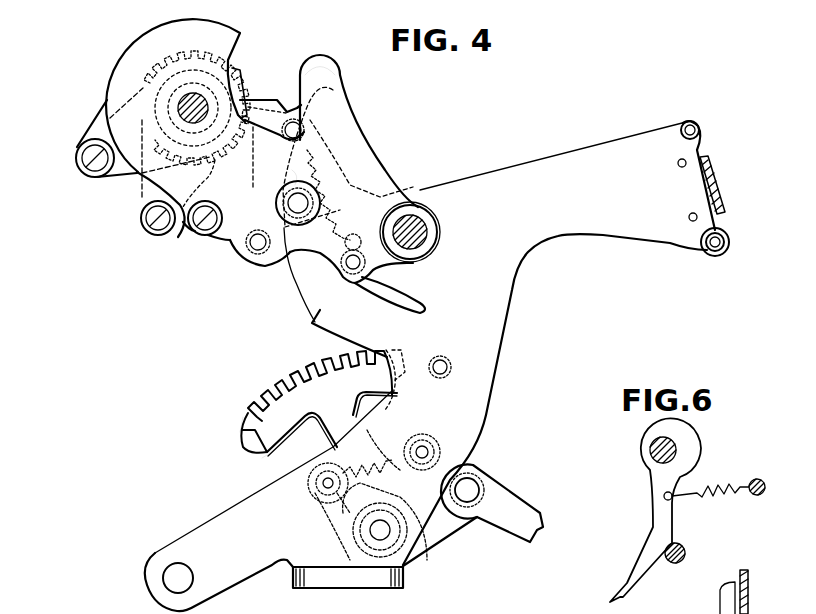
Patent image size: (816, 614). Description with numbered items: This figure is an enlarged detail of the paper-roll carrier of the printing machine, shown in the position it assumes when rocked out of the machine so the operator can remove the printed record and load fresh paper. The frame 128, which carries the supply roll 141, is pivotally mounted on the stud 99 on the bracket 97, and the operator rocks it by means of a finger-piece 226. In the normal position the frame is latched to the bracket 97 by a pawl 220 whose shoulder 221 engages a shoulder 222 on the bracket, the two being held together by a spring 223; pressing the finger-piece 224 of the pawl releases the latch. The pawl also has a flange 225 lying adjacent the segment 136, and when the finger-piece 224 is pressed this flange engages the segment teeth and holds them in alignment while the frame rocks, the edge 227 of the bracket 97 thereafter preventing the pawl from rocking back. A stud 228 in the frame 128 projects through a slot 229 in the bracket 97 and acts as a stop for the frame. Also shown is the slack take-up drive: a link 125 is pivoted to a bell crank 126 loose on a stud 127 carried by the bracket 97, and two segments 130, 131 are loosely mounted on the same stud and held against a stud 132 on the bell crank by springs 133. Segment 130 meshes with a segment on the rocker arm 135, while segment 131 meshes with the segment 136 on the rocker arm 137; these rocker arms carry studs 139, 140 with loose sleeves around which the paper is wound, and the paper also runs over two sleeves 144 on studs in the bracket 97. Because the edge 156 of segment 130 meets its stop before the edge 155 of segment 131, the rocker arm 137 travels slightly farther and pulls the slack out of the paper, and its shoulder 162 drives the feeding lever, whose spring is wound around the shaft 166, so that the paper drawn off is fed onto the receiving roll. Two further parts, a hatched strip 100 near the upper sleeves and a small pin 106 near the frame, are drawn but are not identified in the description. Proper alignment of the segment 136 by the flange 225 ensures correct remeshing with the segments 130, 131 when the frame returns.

The bracket 97 is at (529, 165).
The stud 99 is at (418, 220).
The stop bar 100 is at (712, 178).
The pin 106 is at (446, 362).
The link 125 is at (512, 500).
The bell crank 126 is at (437, 533).
The stud 127 is at (395, 508).
The frame 128 is at (360, 150).
The segment 130 is at (248, 442).
The segment 131 is at (290, 416).
The stud 132 is at (322, 488).
The springs 133 is at (400, 460).
The rocker arm 135 is at (124, 170).
The segment 136 is at (239, 80).
The rocker arm 137 is at (142, 200).
The stud 139 is at (88, 170).
The stud 140 is at (178, 237).
The supply roll 141 is at (280, 198).
The sleeves 144 is at (681, 132).
The edge 155 is at (240, 432).
The edge 156 is at (265, 458).
The shoulder 162 is at (205, 175).
The shaft 166 is at (205, 125).
The pawl 220 is at (276, 260).
The shoulder 221 is at (295, 185).
The shoulder 222 is at (313, 321).
The spring 223 is at (325, 192).
The finger-piece 224 is at (333, 90).
The flange 225 is at (262, 102).
The finger-piece 226 is at (330, 66).
The edge 227 is at (305, 295).
The stud 228 is at (353, 270).
The slot 229 is at (400, 308).